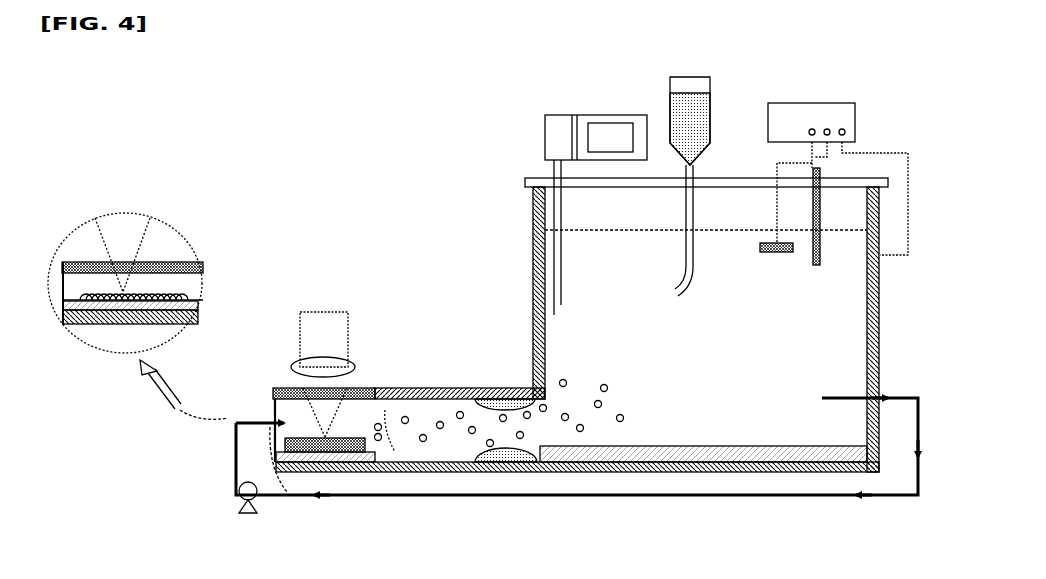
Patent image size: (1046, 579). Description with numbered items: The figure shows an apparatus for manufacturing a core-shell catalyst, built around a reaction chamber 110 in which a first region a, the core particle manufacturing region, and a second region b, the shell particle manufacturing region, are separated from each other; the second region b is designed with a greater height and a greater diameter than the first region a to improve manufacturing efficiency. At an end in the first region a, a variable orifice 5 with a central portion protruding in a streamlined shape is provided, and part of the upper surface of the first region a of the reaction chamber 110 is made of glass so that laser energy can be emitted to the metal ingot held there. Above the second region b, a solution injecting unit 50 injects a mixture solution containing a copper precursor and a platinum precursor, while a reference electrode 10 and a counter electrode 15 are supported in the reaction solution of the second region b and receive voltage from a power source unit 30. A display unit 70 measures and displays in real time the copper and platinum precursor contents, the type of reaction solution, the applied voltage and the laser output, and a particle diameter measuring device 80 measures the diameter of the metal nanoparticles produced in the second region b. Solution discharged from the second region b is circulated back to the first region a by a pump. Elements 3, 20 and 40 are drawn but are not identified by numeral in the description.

The stage / processing chamber 3 is at (286, 385).
The variable orifice 5 is at (500, 470).
The reference electrode 10 is at (320, 312).
The counter electrode 15 is at (775, 167).
The circulation line / wiring 20 is at (910, 212).
The power source unit 30 is at (800, 103).
The tank 40 is at (881, 343).
The solution injecting unit 50 is at (710, 99).
The display unit 70 is at (612, 124).
The particle diameter measuring device 80 is at (552, 124).
The reaction chamber 110 is at (858, 474).
The first region a is at (421, 490).
The second region b is at (760, 492).